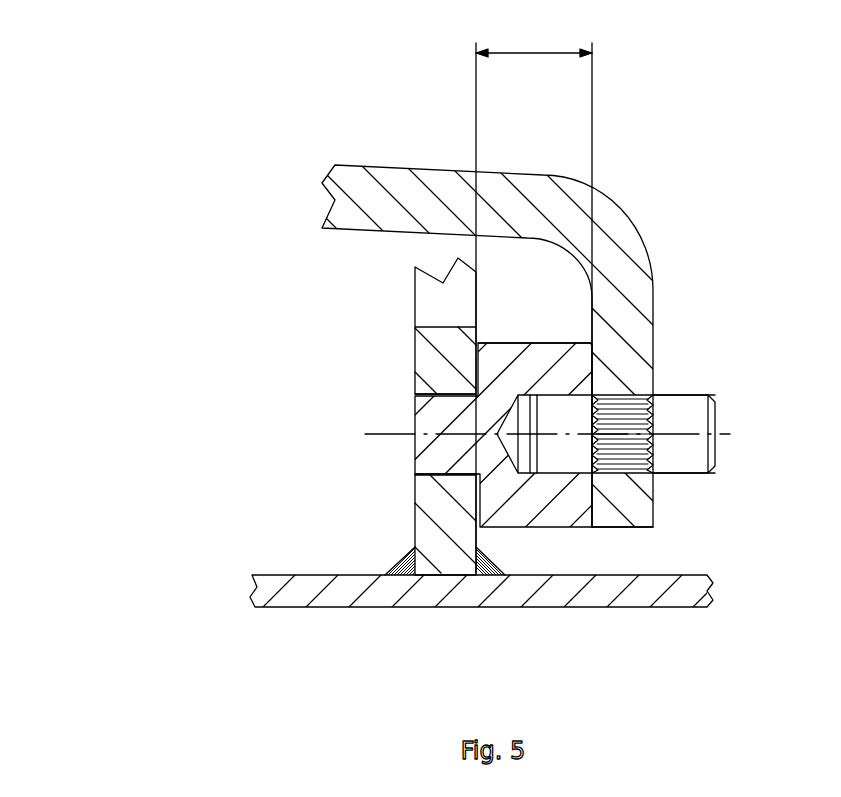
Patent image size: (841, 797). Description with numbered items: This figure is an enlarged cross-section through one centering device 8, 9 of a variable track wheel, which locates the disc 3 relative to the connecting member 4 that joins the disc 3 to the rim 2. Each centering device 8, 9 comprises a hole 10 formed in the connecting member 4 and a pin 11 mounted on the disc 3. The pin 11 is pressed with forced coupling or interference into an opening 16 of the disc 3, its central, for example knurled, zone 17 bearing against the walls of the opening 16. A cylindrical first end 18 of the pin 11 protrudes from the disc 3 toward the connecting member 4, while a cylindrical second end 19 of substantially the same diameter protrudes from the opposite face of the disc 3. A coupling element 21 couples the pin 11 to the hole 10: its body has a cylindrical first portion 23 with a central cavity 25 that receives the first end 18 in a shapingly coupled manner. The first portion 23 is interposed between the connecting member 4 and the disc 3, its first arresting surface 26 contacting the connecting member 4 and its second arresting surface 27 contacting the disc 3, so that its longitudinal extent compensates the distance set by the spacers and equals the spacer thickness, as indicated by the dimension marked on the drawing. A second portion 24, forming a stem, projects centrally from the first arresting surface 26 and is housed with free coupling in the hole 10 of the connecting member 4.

The rim 2 is at (343, 607).
The disc 3 is at (615, 212).
The connecting member 4 is at (415, 360).
The centering device 8 is at (187, 165).
The centering device 9 is at (505, 404).
The hole 10 is at (450, 395).
The pin 11 is at (680, 417).
The opening 16 is at (633, 470).
The central zone 17 is at (622, 435).
The first end 18 is at (562, 393).
The second end 19 is at (675, 393).
The coupling element 21 is at (520, 342).
The first portion 23 is at (537, 525).
The second portion 24 is at (415, 453).
The cavity 25 is at (530, 473).
The first arresting surface 26 is at (475, 503).
The second arresting surface 27 is at (603, 498).